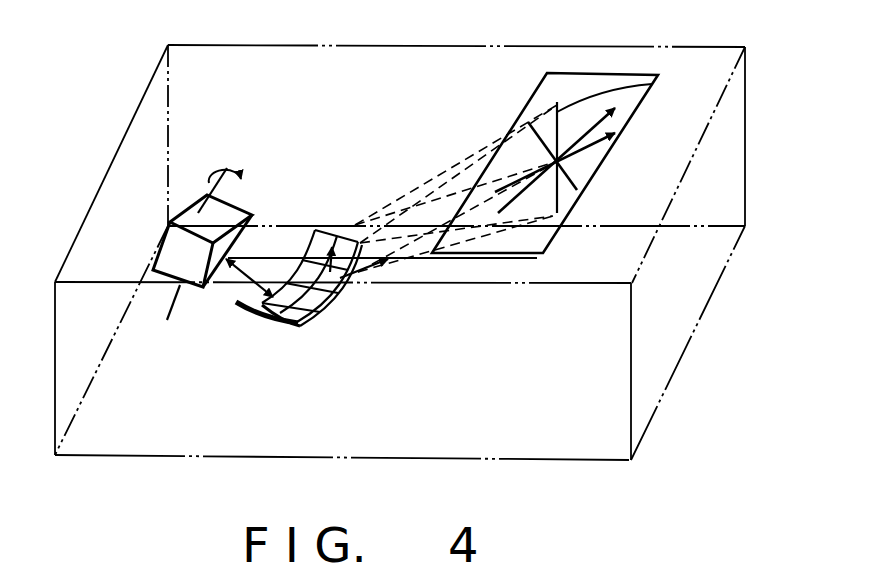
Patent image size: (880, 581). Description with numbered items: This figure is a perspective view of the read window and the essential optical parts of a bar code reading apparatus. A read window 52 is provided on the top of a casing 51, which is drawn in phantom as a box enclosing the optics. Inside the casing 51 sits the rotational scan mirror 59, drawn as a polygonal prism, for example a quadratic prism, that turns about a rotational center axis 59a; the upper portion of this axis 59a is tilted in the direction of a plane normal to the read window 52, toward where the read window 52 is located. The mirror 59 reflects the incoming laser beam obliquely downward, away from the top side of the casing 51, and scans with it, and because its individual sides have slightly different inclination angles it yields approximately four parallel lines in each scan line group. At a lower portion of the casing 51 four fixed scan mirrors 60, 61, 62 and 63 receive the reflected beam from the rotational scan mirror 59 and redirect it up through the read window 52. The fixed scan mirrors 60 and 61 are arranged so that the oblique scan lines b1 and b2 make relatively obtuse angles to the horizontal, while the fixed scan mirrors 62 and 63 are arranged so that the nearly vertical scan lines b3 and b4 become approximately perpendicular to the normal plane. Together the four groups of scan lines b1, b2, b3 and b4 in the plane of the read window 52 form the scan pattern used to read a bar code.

The casing 51 is at (720, 185).
The read window 52 is at (565, 83).
The rotational scan mirror 59 is at (198, 212).
The rotational center axis 59a is at (175, 300).
The fixed scan mirror 60 is at (333, 298).
The fixed scan mirror 61 is at (312, 318).
The fixed scan mirror 62 is at (320, 240).
The fixed scan mirror 63 is at (263, 318).
The scan line group b1 is at (652, 84).
The scan line group b2 is at (603, 121).
The scan line group b3 is at (536, 135).
The scan line group b4 is at (603, 150).